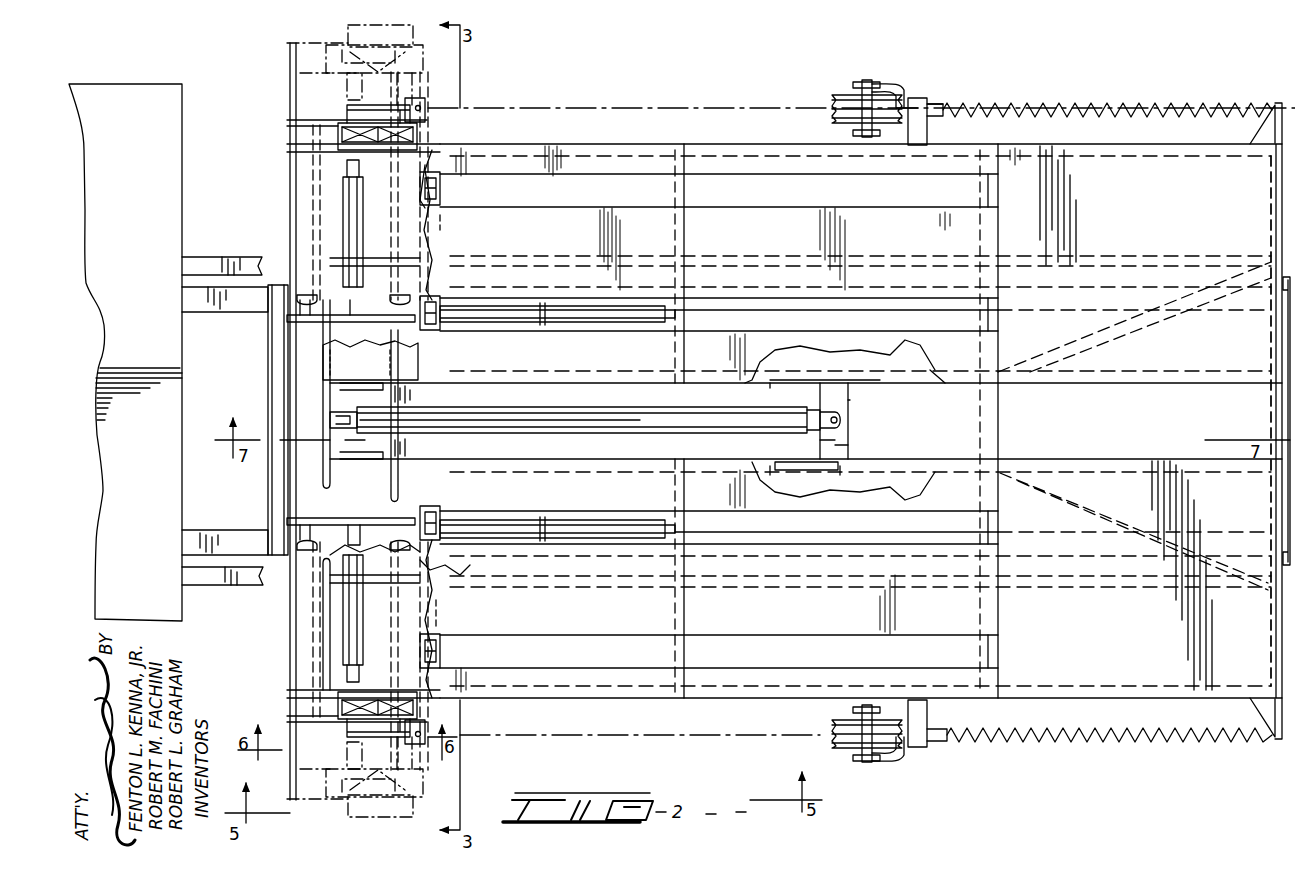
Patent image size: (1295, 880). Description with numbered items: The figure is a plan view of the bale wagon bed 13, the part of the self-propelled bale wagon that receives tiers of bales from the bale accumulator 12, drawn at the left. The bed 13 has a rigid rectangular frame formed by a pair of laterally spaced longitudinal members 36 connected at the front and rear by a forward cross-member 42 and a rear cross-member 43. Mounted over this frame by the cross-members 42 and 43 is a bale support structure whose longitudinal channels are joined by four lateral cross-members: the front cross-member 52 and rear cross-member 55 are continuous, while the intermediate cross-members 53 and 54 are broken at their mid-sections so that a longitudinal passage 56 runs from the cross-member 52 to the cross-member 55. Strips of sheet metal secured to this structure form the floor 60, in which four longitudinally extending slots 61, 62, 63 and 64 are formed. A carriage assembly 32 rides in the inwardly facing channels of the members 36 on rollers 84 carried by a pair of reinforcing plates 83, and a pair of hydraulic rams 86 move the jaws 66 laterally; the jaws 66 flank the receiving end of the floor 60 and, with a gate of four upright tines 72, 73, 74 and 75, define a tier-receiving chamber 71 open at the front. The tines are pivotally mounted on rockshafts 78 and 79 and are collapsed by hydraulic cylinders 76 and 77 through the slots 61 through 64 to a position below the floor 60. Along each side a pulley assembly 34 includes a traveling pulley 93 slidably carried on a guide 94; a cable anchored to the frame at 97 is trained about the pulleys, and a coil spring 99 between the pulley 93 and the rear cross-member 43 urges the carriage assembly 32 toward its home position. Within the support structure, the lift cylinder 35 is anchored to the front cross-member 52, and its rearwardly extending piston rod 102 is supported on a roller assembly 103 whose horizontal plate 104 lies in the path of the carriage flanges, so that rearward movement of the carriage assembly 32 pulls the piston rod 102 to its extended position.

The bale accumulator 12 is at (150, 78).
The bale wagon bed 13 is at (1212, 82).
The carriage assembly 32 is at (285, 310).
The pulley assembly 34 is at (896, 416).
The lift cylinder 35 is at (520, 416).
The longitudinal members 36 is at (1225, 492).
The forward cross-member 42 is at (278, 283).
The rear cross-member 43 is at (1282, 223).
The front cross-member 52 is at (322, 372).
The intermediate cross-member 53 is at (678, 244).
The intermediate cross-member 54 is at (982, 250).
The rear cross-member 55 is at (1271, 195).
The longitudinal passage 56 is at (806, 419).
The floor 60 is at (1145, 165).
The longitudinally extending slot 61 is at (890, 207).
The longitudinally extending slot 62 is at (900, 331).
The longitudinally extending slot 63 is at (928, 510).
The longitudinally extending slot 64 is at (932, 640).
The jaws 66 is at (412, 117).
The tier-receiving chamber 71 is at (369, 369).
The upright tine 72 is at (445, 190).
The upright tine 73 is at (442, 310).
The upright tine 74 is at (440, 520).
The upright tine 75 is at (442, 655).
The hydraulic cylinder 76 is at (560, 312).
The hydraulic cylinder 77 is at (596, 525).
The rockshaft 78 is at (440, 246).
The rockshaft 79 is at (440, 626).
The reinforcing plates 83 is at (366, 318).
The rollers 84 is at (400, 540).
The hydraulic rams 86 is at (355, 236).
The traveling pulley 93 is at (840, 100).
The guide 94 is at (672, 738).
The cable anchor 97 is at (915, 106).
The coil spring 99 is at (1055, 106).
The piston rod 102 is at (820, 412).
The roller assembly 103 is at (853, 408).
The horizontal plate 104 is at (848, 435).